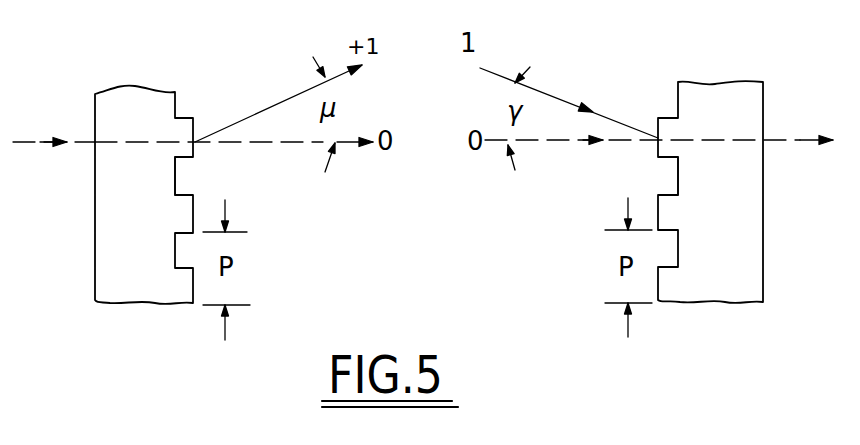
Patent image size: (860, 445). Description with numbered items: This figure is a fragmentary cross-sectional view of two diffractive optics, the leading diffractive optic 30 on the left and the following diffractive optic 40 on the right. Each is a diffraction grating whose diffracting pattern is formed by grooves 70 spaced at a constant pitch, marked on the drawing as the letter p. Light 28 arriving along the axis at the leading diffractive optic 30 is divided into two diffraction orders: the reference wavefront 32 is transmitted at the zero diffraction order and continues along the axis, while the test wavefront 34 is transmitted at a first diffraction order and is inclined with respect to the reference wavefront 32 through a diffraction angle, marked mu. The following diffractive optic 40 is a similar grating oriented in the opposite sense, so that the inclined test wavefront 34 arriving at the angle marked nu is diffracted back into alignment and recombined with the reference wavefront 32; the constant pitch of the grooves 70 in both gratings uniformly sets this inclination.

The incident light beam 28 is at (54, 122).
The leading diffractive optic 30 is at (141, 280).
The reference wavefront 32 is at (258, 145).
The test wavefront 34 is at (279, 101).
The following diffractive optic 40 is at (742, 285).
The grooves 70 is at (177, 177).